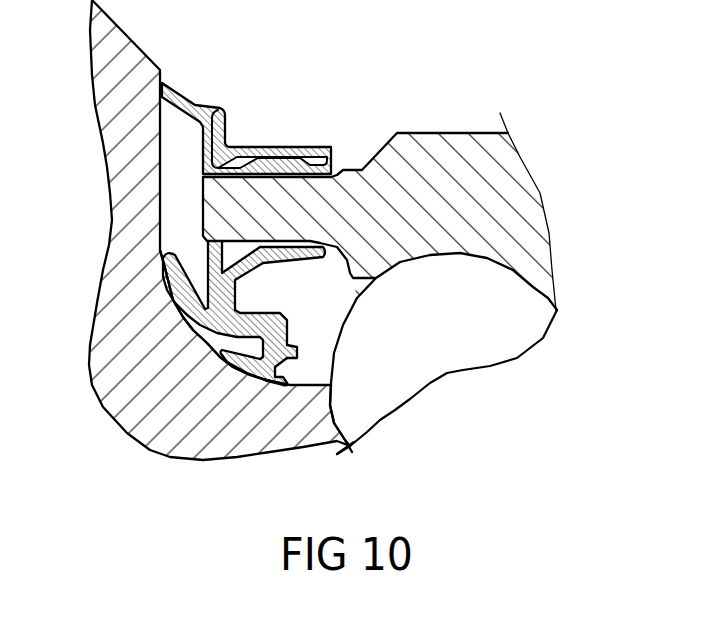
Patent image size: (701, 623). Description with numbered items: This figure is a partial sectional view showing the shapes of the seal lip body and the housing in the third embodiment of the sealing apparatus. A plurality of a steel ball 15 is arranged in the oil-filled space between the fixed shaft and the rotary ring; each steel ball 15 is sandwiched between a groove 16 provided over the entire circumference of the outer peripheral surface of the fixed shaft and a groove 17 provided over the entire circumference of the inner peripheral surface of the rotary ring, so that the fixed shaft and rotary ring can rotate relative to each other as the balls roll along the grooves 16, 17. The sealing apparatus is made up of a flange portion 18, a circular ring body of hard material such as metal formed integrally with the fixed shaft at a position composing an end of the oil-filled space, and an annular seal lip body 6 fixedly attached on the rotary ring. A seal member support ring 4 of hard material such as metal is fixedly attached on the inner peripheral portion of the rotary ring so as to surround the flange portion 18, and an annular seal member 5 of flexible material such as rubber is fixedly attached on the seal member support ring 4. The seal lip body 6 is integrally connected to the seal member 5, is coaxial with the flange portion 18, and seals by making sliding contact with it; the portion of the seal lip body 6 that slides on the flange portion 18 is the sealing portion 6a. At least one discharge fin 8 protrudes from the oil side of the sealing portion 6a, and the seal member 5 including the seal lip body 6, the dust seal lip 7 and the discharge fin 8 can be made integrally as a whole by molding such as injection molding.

The seal member support ring 4 is at (289, 322).
The seal member 5 is at (223, 387).
The seal lip body 6 is at (285, 398).
The sealing portion 6a is at (283, 390).
The dust seal lip 7 is at (163, 253).
The discharge fin 8 is at (297, 362).
The steel ball 15 is at (468, 340).
The groove 16 is at (341, 434).
The groove 17 is at (513, 273).
The flange portion 18 is at (190, 327).